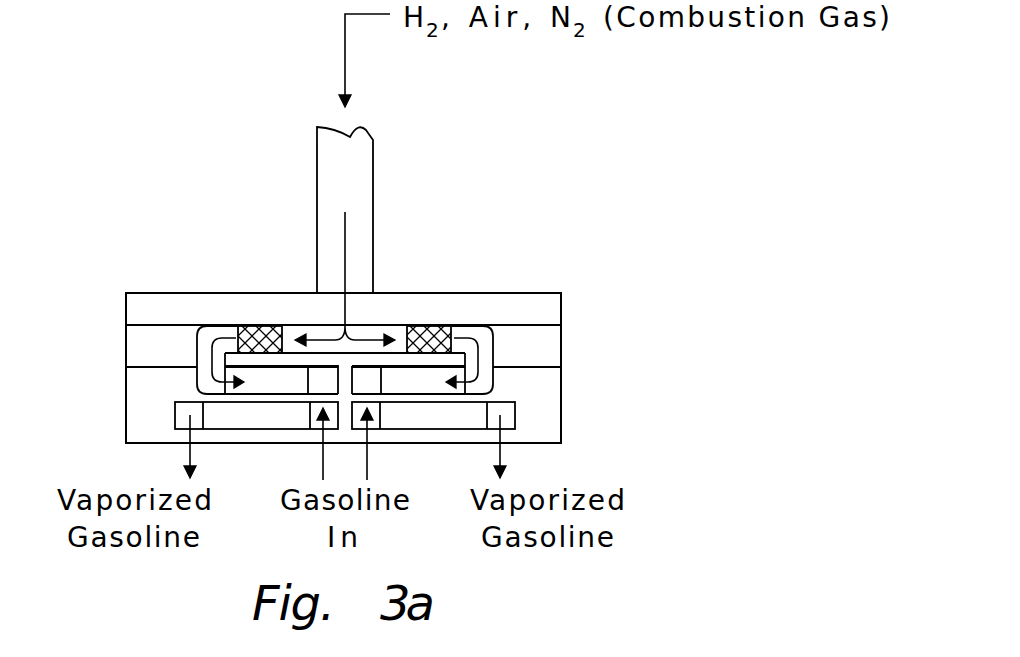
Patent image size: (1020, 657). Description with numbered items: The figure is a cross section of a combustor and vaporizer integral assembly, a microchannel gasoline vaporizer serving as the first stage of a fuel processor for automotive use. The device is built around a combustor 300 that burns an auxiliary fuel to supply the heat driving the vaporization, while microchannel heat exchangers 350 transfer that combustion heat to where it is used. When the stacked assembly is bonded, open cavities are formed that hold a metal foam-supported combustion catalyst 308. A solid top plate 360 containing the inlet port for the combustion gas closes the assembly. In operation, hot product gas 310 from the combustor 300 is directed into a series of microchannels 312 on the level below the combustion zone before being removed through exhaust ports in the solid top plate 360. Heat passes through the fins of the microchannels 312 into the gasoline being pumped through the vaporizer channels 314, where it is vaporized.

The combustion catalyst 308 is at (256, 318).
The hot product gas 310 is at (355, 352).
The microchannels 312 is at (404, 382).
The vaporizer channels 314 is at (409, 419).
The solid top plate 360 is at (561, 308).
The combustor 300 is at (561, 353).
The microchannel heat exchangers 350 is at (561, 410).